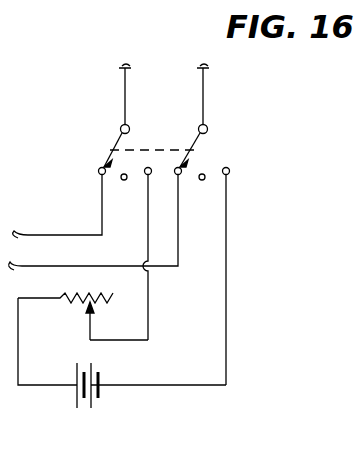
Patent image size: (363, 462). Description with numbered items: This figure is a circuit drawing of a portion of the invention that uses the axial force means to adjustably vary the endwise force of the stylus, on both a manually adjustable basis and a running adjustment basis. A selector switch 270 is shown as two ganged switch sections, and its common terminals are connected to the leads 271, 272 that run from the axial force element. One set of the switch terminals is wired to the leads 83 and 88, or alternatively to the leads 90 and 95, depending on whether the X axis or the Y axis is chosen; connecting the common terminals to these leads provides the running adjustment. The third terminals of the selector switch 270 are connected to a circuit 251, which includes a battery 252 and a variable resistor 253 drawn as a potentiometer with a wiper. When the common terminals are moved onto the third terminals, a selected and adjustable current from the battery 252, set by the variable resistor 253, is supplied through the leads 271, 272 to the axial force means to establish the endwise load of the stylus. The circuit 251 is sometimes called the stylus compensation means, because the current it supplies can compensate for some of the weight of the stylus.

The lead 271 is at (126, 104).
The lead 272 is at (204, 104).
The selector switch 270 is at (210, 140).
The lead 83 is at (57, 206).
The lead 90 is at (57, 206).
The lead 88 is at (93, 222).
The lead 95 is at (93, 222).
The variable resistor 253 is at (87, 331).
The battery 252 is at (73, 396).
The circuit 251 is at (140, 386).